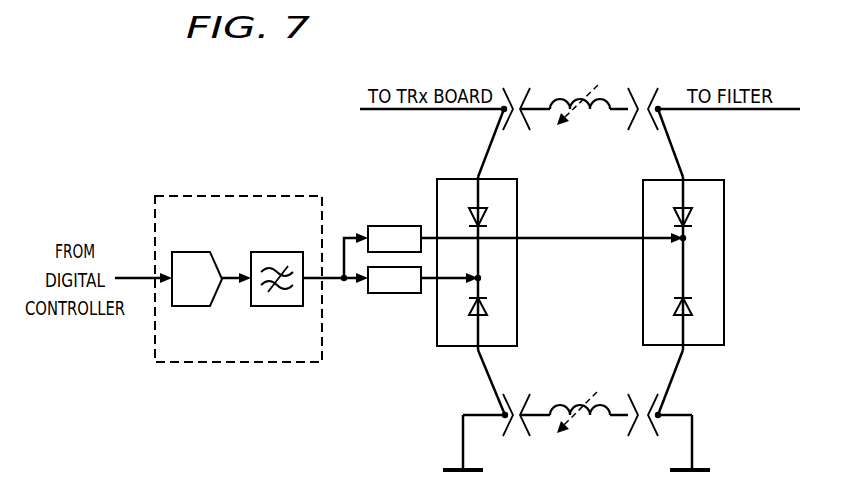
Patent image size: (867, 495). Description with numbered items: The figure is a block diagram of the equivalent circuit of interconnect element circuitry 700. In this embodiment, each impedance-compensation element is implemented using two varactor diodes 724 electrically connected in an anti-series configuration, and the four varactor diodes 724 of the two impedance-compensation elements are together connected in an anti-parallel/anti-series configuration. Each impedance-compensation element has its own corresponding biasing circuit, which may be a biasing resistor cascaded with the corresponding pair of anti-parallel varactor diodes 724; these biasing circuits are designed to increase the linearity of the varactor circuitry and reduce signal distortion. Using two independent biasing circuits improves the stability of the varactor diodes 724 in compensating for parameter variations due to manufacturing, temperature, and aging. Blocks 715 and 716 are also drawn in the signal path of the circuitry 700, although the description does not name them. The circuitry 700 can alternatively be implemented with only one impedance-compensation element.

The interconnect element circuitry 700 is at (263, 81).
The digital-to-analog converter 715 is at (192, 251).
The low-pass filter 716 is at (280, 251).
The varactor diode 724 is at (491, 263).